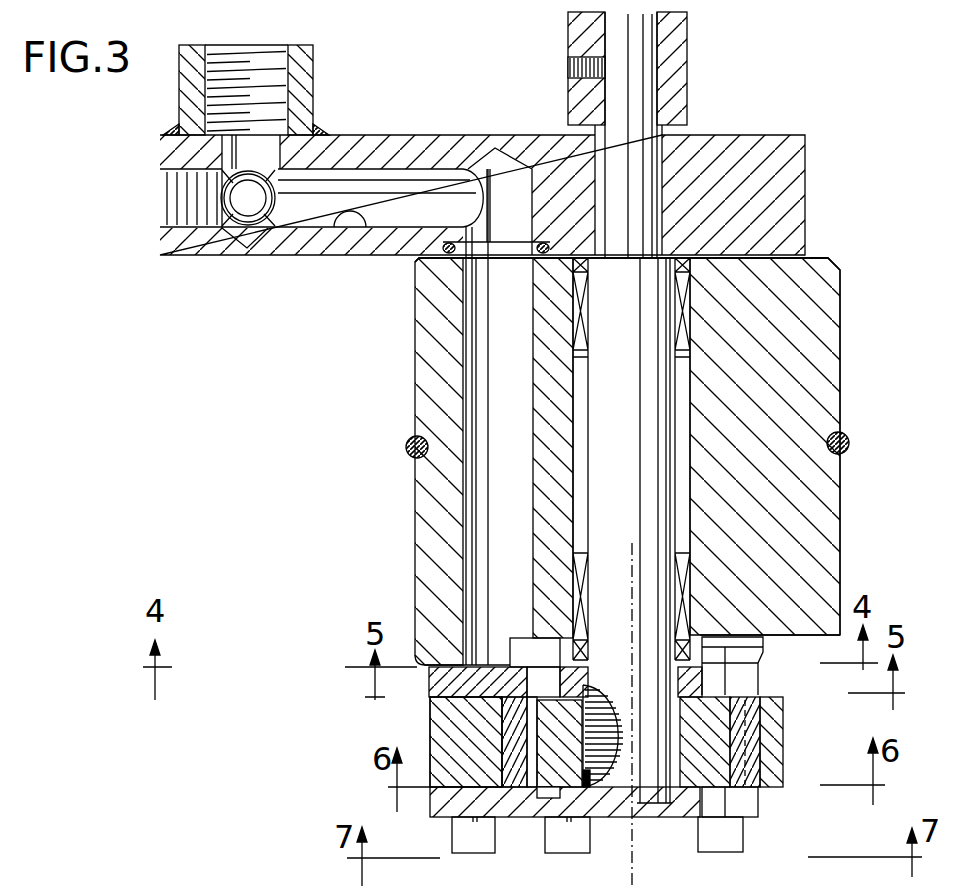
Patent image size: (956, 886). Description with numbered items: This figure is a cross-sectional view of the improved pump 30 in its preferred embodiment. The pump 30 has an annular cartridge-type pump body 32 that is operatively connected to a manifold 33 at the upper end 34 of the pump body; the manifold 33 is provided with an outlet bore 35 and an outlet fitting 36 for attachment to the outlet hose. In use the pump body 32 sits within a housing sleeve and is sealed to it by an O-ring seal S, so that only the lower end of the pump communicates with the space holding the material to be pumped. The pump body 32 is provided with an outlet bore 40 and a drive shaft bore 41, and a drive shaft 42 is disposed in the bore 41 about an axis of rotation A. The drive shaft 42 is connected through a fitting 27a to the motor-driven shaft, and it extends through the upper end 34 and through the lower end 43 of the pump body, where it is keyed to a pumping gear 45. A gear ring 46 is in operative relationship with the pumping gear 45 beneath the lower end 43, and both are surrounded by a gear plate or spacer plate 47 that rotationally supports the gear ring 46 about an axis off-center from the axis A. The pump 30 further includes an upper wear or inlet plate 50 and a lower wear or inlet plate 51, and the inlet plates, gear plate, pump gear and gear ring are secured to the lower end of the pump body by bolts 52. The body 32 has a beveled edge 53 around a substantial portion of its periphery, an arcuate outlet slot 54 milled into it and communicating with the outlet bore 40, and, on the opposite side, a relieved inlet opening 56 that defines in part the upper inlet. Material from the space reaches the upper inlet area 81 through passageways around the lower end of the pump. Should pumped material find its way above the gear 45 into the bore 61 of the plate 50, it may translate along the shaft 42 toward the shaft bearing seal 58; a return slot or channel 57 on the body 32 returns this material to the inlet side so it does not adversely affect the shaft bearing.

The fitting 27a is at (688, 18).
The pump 30 is at (332, 399).
The pump body 32 is at (830, 325).
The manifold 33 is at (805, 158).
The upper end 34 is at (818, 250).
The outlet bore 35 is at (320, 256).
The outlet fitting 36 is at (313, 66).
The outlet bore 40 is at (468, 316).
The drive shaft bore 41 is at (575, 487).
The drive shaft 42 is at (640, 172).
The lower end 43 is at (430, 700).
The pumping gear 45 is at (700, 767).
The gear ring 46 is at (518, 780).
The gear plate 47 is at (443, 767).
The upper inlet plate 50 is at (440, 687).
The lower inlet plate 51 is at (450, 810).
The bolts 52 is at (730, 840).
The beveled edge 53 is at (410, 665).
The outlet slot 54 is at (517, 640).
The inlet opening 56 is at (810, 637).
The return slot 57 is at (692, 657).
The shaft bearing seal 58 is at (577, 650).
The bore 61 is at (680, 676).
The upper inlet area 81 is at (763, 678).
The O-ring seal S is at (652, 441).
The axis of rotation A is at (632, 545).